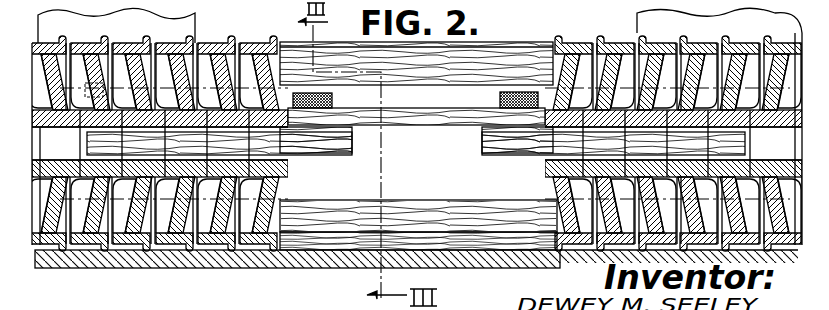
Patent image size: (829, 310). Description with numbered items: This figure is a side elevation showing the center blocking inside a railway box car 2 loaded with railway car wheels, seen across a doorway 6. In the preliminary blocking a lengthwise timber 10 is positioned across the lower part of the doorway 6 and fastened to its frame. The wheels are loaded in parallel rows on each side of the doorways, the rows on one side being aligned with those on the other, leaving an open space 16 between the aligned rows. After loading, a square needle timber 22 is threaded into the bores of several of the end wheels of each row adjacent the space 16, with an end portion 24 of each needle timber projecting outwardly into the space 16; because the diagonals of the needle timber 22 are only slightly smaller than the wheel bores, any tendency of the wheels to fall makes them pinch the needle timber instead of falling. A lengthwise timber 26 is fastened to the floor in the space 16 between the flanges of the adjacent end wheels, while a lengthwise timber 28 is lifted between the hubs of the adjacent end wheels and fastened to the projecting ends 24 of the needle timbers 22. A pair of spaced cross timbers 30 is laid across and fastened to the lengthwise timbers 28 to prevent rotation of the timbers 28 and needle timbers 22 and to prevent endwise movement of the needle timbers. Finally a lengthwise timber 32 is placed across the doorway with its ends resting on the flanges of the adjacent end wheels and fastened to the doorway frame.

The railway box car 2 is at (172, 262).
The doorway 6 is at (637, 18).
The lengthwise timber 10 is at (405, 206).
The open space 16 is at (471, 193).
The square needle timber 22 is at (97, 145).
The end portion 24 is at (320, 153).
The lengthwise timber 26 is at (324, 246).
The lengthwise timber 28 is at (455, 117).
The cross timber 30 is at (300, 93).
The lengthwise timber 32 is at (483, 47).